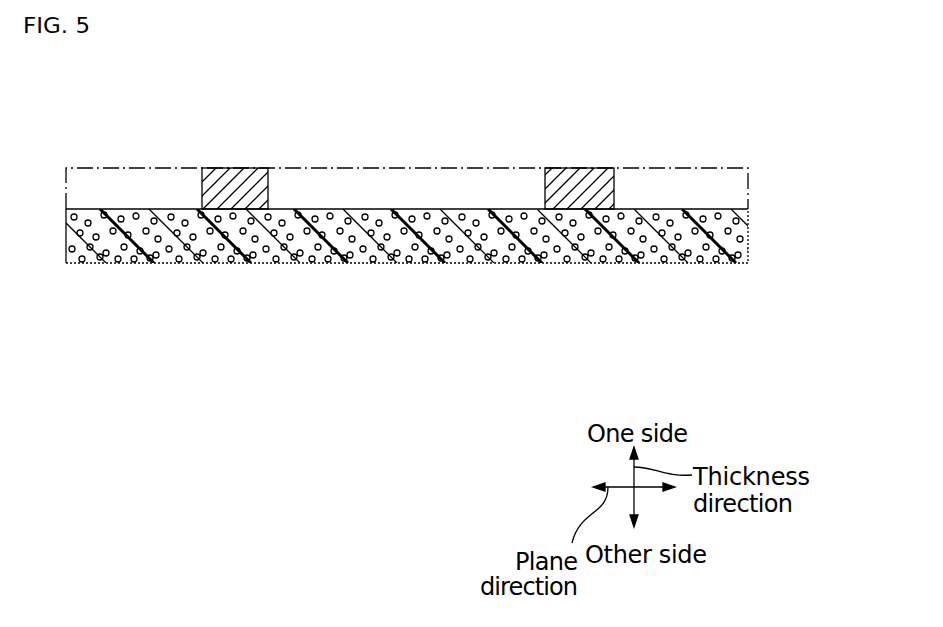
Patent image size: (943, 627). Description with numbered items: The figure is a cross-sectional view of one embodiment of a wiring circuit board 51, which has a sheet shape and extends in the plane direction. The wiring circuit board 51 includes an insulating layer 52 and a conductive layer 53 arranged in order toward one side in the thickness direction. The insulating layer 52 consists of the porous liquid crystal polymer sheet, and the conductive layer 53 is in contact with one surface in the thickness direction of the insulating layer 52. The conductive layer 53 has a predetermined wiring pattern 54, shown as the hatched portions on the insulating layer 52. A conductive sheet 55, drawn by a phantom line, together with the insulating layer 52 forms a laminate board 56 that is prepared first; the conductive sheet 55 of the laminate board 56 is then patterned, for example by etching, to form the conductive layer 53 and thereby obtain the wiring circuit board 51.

The wiring circuit board 51 is at (455, 205).
The insulating layer 52 is at (748, 240).
The conductive layer 53 is at (614, 189).
The wiring pattern 54 is at (230, 168).
The conductive sheet 55 is at (748, 185).
The laminate board 56 is at (455, 163).